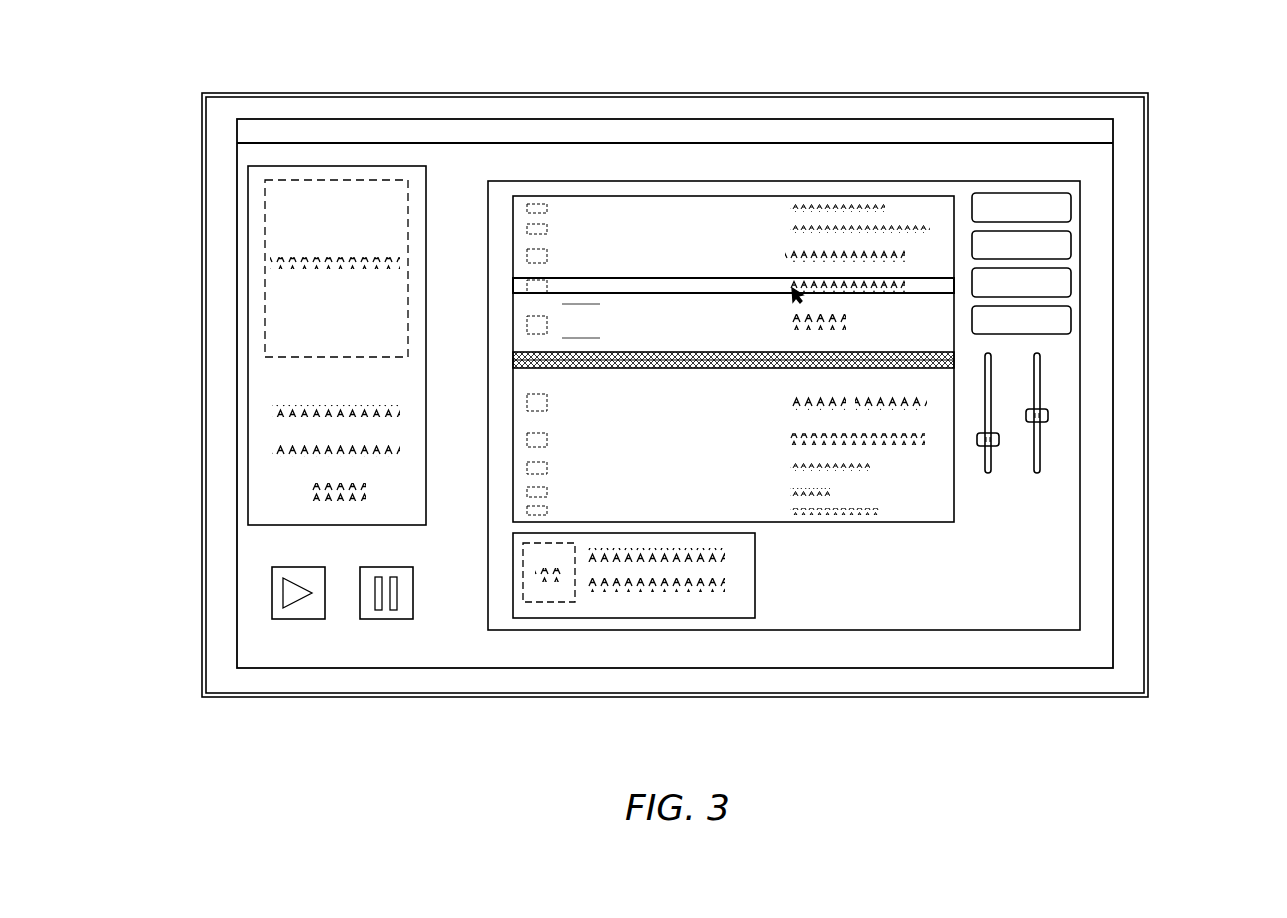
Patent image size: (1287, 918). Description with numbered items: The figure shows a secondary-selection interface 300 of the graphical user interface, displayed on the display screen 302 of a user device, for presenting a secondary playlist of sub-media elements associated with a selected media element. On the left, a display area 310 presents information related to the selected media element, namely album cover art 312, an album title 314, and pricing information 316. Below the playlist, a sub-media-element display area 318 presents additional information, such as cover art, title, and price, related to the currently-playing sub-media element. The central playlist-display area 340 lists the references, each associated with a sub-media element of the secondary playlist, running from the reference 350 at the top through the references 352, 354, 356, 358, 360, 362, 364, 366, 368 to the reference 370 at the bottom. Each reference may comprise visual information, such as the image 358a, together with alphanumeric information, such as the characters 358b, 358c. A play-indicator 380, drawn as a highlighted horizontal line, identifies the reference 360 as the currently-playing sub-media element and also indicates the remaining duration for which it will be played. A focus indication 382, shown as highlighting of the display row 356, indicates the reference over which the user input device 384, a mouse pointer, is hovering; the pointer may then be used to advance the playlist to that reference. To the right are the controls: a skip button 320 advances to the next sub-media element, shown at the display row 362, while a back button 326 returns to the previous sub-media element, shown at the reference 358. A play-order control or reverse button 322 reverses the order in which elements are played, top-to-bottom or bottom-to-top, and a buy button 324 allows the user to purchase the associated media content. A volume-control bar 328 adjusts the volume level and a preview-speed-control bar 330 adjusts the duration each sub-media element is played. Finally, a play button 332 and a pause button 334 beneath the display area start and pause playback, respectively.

The secondary-selection interface 300 is at (990, 55).
The display screen 302 is at (728, 93).
The display area 310 is at (248, 358).
The album cover art 312 is at (287, 234).
The album title 314 is at (268, 410).
The pricing information 316 is at (300, 490).
The sub-media-element display area 318 is at (546, 618).
The skip button 320 is at (1071, 207).
The play-order control button 322 is at (1071, 245).
The buy button 324 is at (1071, 283).
The back button 326 is at (1071, 320).
The volume-control bar 328 is at (993, 459).
The preview-speed-control bar 330 is at (1043, 390).
The play button 332 is at (282, 597).
The pause button 334 is at (390, 619).
The playlist-display area 340 is at (553, 196).
The reference 350 is at (520, 212).
The reference 352 is at (520, 232).
The reference 354 is at (520, 253).
The display row 356 is at (515, 286).
The reference 358 is at (520, 322).
The image 358a is at (695, 302).
The characters 358b is at (703, 335).
The characters 358c is at (845, 329).
The reference 360 is at (515, 360).
The display row 362 is at (520, 403).
The reference 364 is at (520, 440).
The reference 366 is at (520, 468).
The reference 368 is at (520, 492).
The reference 370 is at (520, 512).
The play-indicator 380 is at (753, 370).
The focus indication 382 is at (934, 265).
The user input device 384 is at (801, 298).